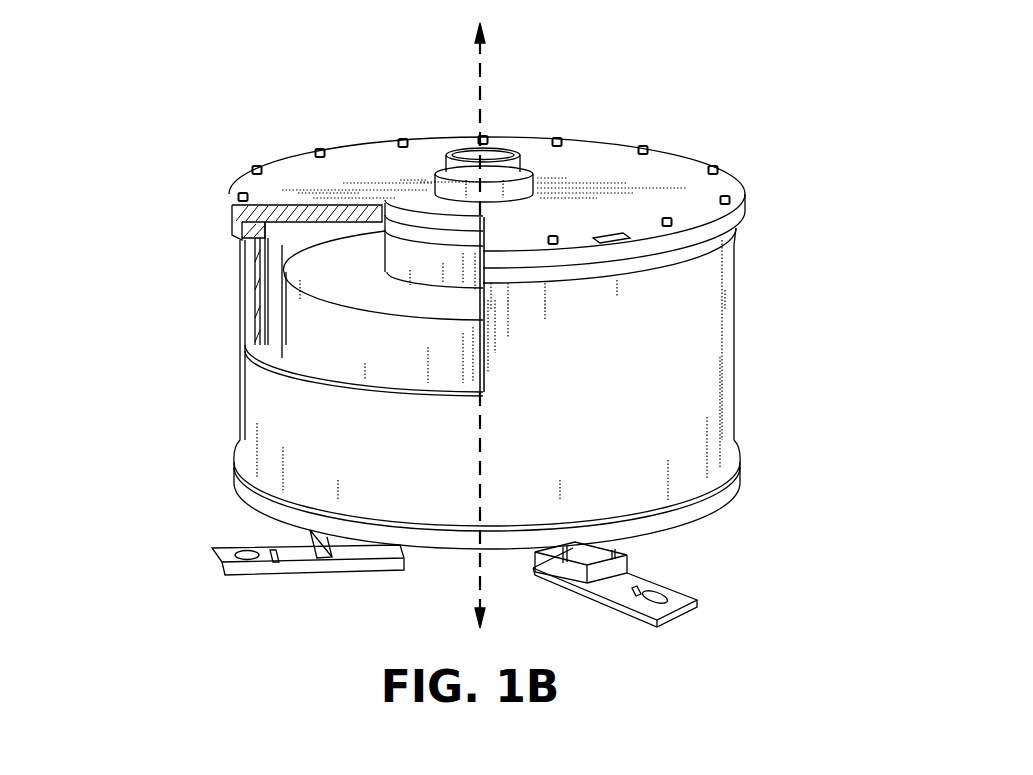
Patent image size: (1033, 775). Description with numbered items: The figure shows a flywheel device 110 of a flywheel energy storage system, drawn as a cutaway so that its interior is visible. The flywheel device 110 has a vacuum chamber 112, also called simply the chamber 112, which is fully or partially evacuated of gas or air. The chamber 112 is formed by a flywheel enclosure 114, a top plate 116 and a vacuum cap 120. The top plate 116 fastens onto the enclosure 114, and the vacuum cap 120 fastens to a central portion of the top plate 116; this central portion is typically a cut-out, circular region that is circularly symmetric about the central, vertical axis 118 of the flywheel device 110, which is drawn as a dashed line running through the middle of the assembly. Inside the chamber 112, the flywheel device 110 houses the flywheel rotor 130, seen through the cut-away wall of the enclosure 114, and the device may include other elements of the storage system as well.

The flywheel device 110 is at (320, 70).
The vacuum chamber 112 is at (611, 399).
The flywheel enclosure 114 is at (258, 414).
The top plate 116 is at (318, 176).
The vertical axis 118 is at (552, 319).
The vacuum cap 120 is at (540, 166).
The flywheel rotor 130 is at (292, 320).